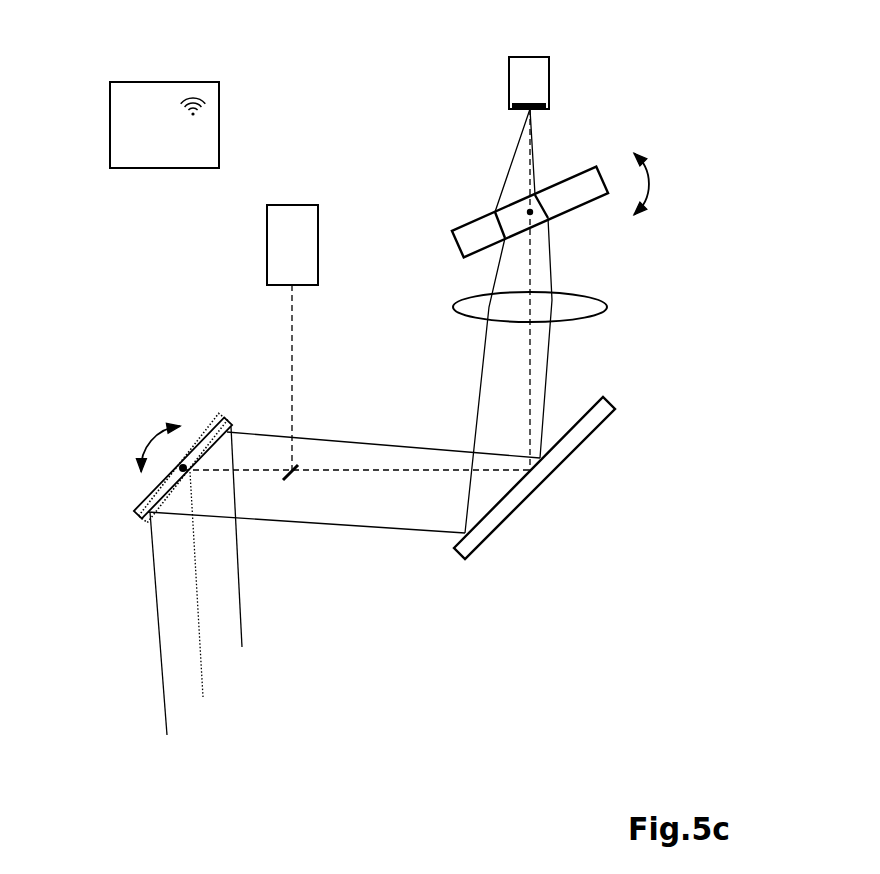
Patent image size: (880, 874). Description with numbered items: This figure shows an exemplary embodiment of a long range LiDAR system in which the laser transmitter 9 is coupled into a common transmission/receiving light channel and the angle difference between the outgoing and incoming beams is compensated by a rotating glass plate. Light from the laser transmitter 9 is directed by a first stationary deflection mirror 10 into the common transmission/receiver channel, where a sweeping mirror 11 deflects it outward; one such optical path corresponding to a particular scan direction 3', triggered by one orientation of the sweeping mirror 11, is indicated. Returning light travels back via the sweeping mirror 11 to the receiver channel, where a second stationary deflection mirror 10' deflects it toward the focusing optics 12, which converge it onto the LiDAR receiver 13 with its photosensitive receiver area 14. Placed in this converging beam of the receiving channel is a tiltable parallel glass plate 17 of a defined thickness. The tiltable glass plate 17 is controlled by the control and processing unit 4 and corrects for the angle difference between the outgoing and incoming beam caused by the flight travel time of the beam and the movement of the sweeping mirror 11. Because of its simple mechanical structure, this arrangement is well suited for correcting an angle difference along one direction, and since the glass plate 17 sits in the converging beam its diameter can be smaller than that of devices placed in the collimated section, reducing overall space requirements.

The control and processing unit 4 is at (120, 153).
The laser transmitter 9 is at (302, 218).
The LiDAR receiver 13 is at (540, 68).
The photosensitive receiver area 14 is at (533, 102).
The tiltable parallel glass plate 17 is at (662, 172).
The focusing optics 12 is at (587, 302).
The second stationary deflection mirror 10' is at (559, 478).
The first stationary deflection mirror 10 is at (329, 493).
The sweeping mirror 11 is at (133, 429).
The scan direction 3' is at (231, 581).